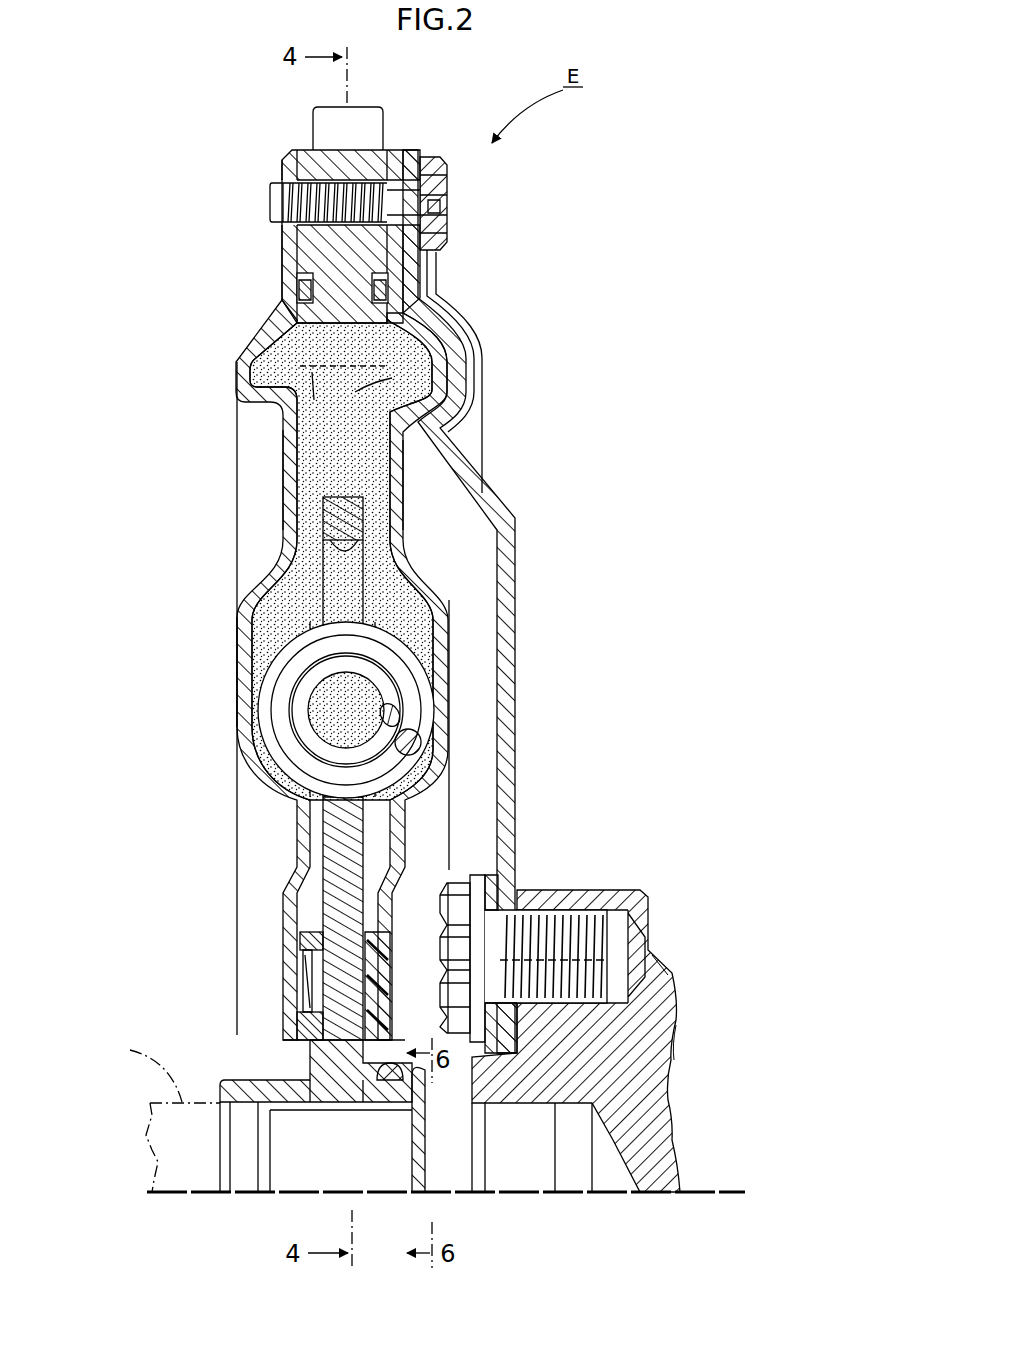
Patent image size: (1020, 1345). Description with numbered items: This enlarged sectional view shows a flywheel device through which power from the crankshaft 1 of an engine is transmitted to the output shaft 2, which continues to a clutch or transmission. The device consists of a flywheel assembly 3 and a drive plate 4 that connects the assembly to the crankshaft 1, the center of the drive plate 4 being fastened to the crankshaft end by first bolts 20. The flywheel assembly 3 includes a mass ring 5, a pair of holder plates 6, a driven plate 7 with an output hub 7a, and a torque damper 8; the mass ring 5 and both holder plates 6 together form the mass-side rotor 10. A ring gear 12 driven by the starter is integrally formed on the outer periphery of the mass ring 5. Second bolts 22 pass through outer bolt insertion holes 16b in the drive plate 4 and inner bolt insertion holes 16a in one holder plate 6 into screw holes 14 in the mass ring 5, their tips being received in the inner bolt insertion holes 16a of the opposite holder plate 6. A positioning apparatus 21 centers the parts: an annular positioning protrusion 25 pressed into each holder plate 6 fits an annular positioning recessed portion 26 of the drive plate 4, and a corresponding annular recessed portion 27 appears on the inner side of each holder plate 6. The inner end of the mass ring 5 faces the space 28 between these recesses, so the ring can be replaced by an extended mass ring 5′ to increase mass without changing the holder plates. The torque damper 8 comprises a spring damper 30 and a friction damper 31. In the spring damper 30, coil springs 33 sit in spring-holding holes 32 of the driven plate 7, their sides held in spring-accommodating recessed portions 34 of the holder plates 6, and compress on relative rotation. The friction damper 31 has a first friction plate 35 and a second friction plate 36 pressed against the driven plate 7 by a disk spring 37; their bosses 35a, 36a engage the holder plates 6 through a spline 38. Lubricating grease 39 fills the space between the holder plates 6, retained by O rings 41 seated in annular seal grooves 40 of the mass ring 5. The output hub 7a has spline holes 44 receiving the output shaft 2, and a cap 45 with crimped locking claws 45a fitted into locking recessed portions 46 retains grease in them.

The crankshaft 1 is at (670, 1050).
The output shaft 2 is at (130, 1050).
The flywheel assembly 3 is at (262, 328).
The drive plate 4 is at (411, 601).
The mass ring 5 is at (300, 340).
The extended mass ring 5′ is at (314, 400).
The holder plate 6 is at (288, 455).
The driven plate 7 is at (371, 742).
The output hub 7a is at (295, 1095).
The torque damper 8 is at (300, 738).
The mass-side rotor 10 is at (312, 670).
The ring gear 12 is at (366, 108).
The screw hole 14 is at (340, 214).
The inner bolt insertion hole 16a is at (278, 188).
The outer bolt insertion hole 16b is at (428, 216).
The first bolt 20 is at (459, 885).
The positioning apparatus 21 is at (506, 371).
The second bolt 22 is at (449, 182).
The annular positioning protrusion 25 is at (462, 358).
The annular positioning recessed portion 26 is at (545, 322).
The annular recessed portion 27 is at (272, 372).
The space 28 is at (358, 390).
The spring damper 30 is at (317, 672).
The friction damper 31 is at (158, 645).
The spring-holding hole 32 is at (345, 557).
The coil spring 33 is at (351, 660).
The spring-accommodating recessed portion 34 is at (266, 610).
The first friction plate 35 is at (373, 940).
The boss 35a is at (507, 1045).
The second friction plate 36 is at (302, 943).
The boss 36a is at (292, 1036).
The disk spring 37 is at (301, 980).
The spline 38 is at (298, 1024).
The lubricating grease 39 is at (440, 350).
The annular seal groove 40 is at (300, 284).
The O ring 41 is at (298, 296).
The spline hole 44 is at (321, 1110).
The cap 45 is at (370, 1129).
The locking claw 45a is at (425, 1100).
The locking recessed portion 46 is at (384, 1075).